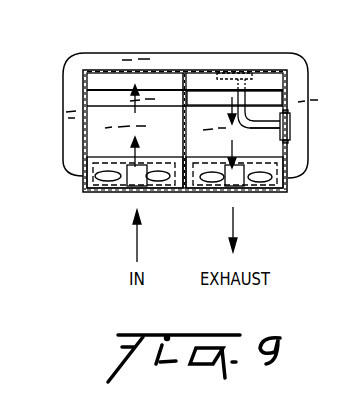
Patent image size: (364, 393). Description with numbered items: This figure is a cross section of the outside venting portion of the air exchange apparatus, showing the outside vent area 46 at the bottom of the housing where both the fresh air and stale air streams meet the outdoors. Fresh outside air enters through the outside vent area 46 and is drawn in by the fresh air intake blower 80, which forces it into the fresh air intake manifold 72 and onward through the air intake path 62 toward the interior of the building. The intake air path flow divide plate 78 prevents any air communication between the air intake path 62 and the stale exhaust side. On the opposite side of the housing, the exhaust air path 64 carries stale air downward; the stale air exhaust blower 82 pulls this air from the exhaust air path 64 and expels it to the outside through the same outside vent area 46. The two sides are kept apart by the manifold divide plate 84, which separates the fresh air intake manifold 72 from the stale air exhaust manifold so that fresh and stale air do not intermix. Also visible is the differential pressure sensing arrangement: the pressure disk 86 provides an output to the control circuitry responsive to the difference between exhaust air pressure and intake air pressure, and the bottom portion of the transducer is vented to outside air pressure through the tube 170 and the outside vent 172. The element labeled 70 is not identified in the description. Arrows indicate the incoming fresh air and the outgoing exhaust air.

The outside vent 46 is at (195, 227).
The air intake path 62 is at (107, 75).
The exhaust air path 64 is at (274, 97).
The upper partition 70 is at (95, 102).
The fresh air intake manifold 72 is at (103, 142).
The intake air path flow divide plate 78 is at (274, 80).
The fresh air intake blower 80 is at (120, 180).
The stale air exhaust blower 82 is at (255, 185).
The manifold divide plate 84 is at (192, 75).
The pressure disk 86 is at (237, 75).
The tube 170 is at (267, 124).
The outside vent 172 is at (290, 130).